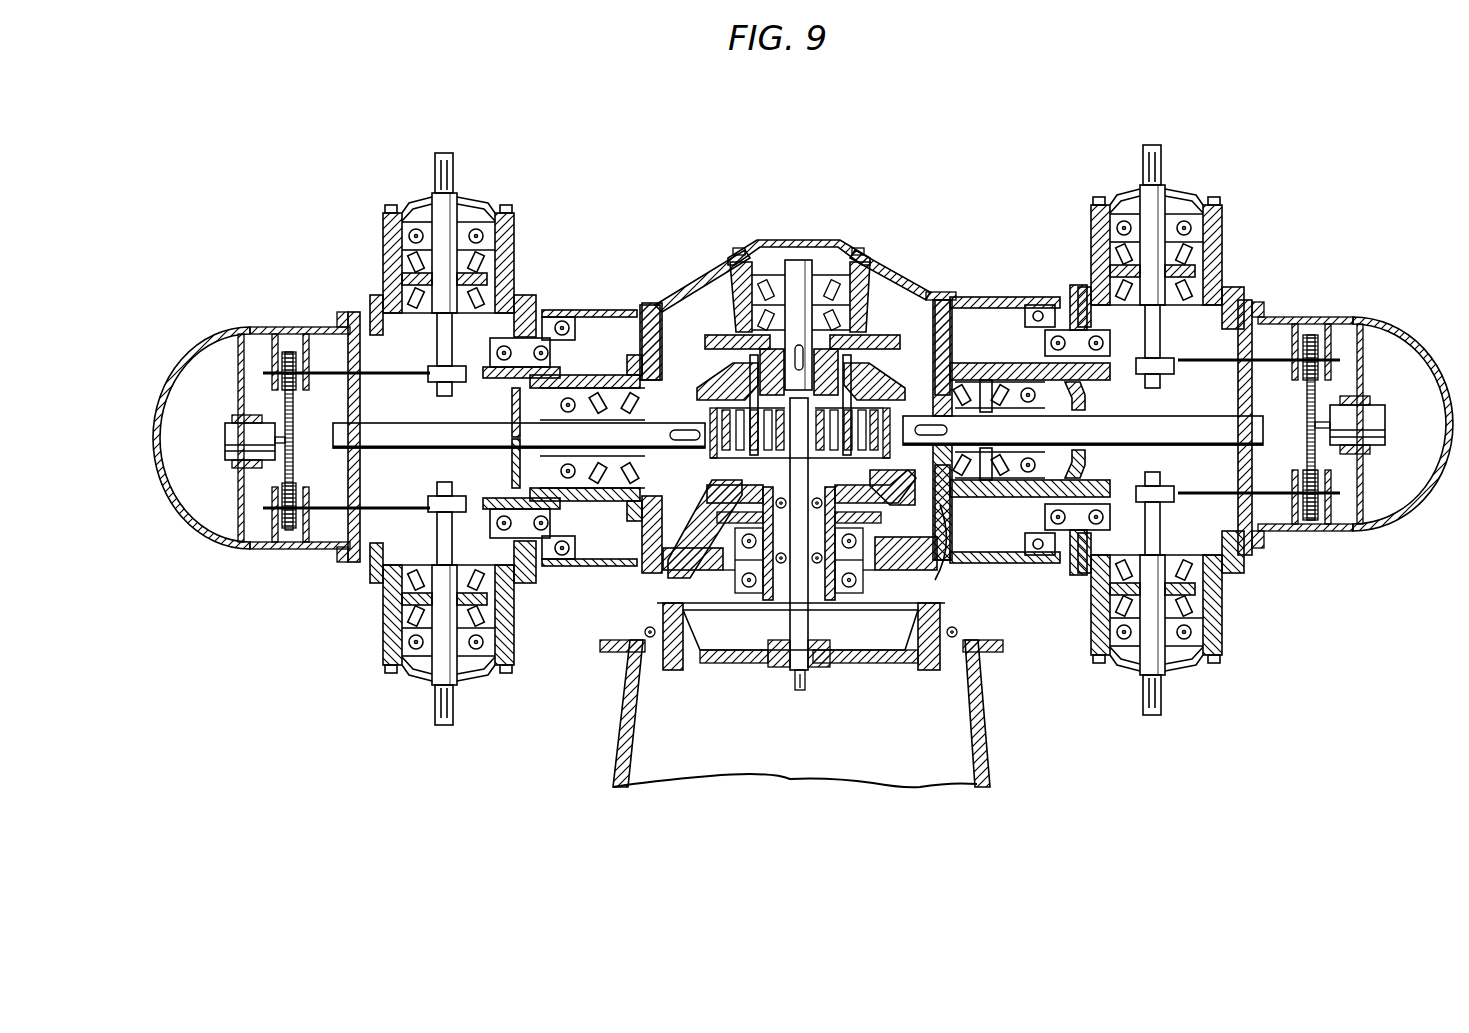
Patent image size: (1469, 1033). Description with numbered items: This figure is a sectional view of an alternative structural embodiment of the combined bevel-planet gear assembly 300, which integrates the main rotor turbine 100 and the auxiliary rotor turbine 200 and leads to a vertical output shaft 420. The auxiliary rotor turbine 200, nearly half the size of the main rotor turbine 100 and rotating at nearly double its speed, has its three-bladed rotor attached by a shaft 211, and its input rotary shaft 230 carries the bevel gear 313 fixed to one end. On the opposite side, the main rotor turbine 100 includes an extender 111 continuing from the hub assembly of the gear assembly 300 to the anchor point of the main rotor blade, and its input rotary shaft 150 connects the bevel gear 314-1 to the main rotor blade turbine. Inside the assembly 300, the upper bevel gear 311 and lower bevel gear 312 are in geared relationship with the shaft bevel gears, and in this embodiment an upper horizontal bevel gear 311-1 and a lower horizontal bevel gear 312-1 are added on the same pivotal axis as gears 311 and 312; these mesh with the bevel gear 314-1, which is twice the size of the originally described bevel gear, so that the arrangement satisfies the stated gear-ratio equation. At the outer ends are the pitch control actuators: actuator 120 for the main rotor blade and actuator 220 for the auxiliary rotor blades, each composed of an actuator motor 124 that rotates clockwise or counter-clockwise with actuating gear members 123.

The main rotor turbine 100 is at (1362, 212).
The extender 111 is at (1152, 185).
The pitch control actuator 120 is at (1335, 388).
The actuating gear members 123 is at (1318, 466).
The actuator motor 124 is at (1375, 415).
The input rotary shaft 150 is at (1185, 418).
The auxiliary rotor turbine 200 is at (228, 292).
The shaft 211 is at (457, 176).
The pitch control actuator 220 is at (262, 478).
The input rotary shaft 230 is at (486, 430).
The combined bevel-planet gear assembly 300 is at (822, 205).
The upper bevel gear 311 is at (728, 365).
The upper horizontal bevel gear 311-1 is at (730, 330).
The lower bevel gear 312 is at (700, 500).
The lower horizontal bevel gear 312-1 is at (715, 506).
The bevel gear 313 is at (705, 405).
The bevel gear 314-1 is at (925, 330).
The vertical output shaft 420 is at (800, 660).